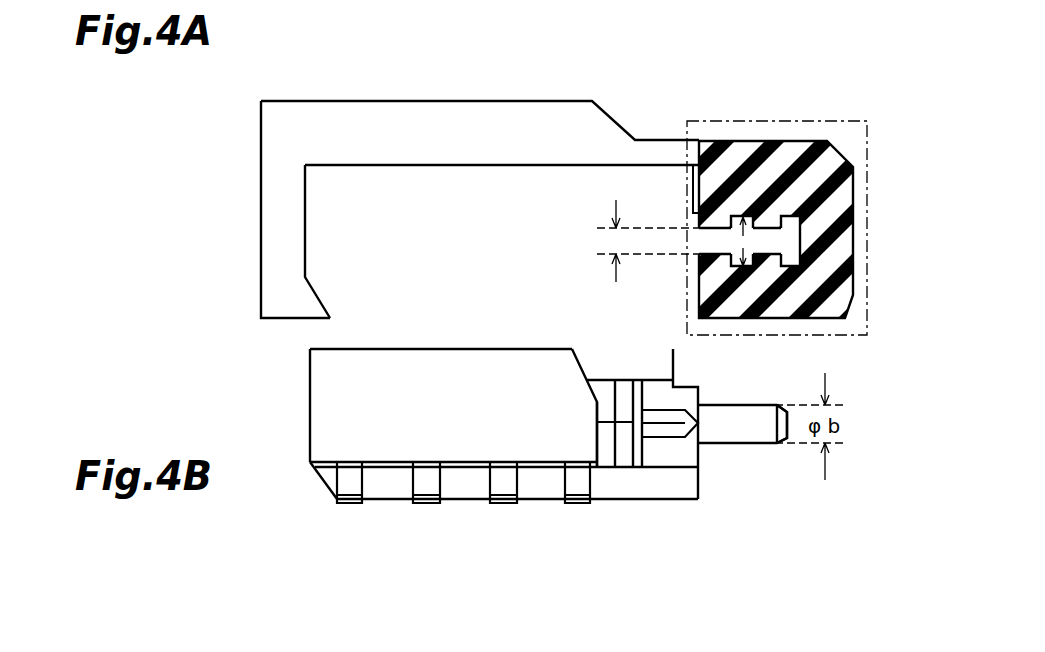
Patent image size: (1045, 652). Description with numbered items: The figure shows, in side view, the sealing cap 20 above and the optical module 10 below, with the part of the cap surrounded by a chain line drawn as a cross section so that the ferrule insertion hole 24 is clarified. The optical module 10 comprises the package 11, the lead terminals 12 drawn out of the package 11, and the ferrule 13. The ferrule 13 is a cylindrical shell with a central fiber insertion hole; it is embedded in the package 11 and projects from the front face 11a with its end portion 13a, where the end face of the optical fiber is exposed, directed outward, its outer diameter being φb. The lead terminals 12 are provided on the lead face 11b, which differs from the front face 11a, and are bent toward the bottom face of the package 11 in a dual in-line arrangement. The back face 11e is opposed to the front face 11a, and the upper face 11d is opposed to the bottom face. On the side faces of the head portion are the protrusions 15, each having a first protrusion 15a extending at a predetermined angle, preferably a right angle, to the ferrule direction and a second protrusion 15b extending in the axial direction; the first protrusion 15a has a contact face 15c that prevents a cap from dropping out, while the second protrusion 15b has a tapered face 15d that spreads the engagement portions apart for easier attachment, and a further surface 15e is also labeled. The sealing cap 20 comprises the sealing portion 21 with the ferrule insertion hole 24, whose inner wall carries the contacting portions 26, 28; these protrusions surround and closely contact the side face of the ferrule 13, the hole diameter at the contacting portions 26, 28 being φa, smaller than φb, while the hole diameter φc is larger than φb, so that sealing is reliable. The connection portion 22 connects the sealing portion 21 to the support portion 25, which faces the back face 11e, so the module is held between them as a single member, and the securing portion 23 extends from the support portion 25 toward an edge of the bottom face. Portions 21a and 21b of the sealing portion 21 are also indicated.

In FIG. 4B, the optical module 10 is at (521, 343).
In FIG. 4B, the package 11 is at (413, 348).
In FIG. 4B, the front face 11a is at (702, 456).
In FIG. 4B, the lead face 11b is at (316, 448).
In FIG. 4B, the upper face 11d is at (332, 346).
In FIG. 4B, the back face 11e is at (308, 392).
In FIG. 4B, the lead terminals 12 is at (345, 499).
In FIG. 4B, the ferrule 13 is at (735, 405).
In FIG. 4B, the end portion of the ferrule 13a is at (789, 434).
In FIG. 4B, the protrusions 15 is at (712, 603).
In FIG. 4B, the first protrusion 15a is at (626, 460).
In FIG. 4B, the second protrusion 15b is at (665, 460).
In FIG. 4B, the contact face 15c is at (612, 458).
In FIG. 4B, the tapered face 15d is at (645, 460).
In FIG. 4B, the end wall of holding portion 15e is at (691, 460).
In FIG. 4A, the sealing cap 20 is at (531, 99).
In FIG. 4A, the sealing portion 21 is at (745, 150).
In FIG. 4A, the arm attachment end 21a is at (688, 176).
In FIG. 4A, the bottom of hole 21b is at (795, 240).
In FIG. 4A, the connection portion 22 is at (384, 100).
In FIG. 4A, the securing portion 23 is at (324, 302).
In FIG. 4A, the ferrule insertion hole 24 is at (712, 240).
In FIG. 4A, the support portion 25 is at (260, 234).
In FIG. 4A, the contacting portion 26 is at (722, 268).
In FIG. 4A, the contacting portion 28 is at (770, 268).